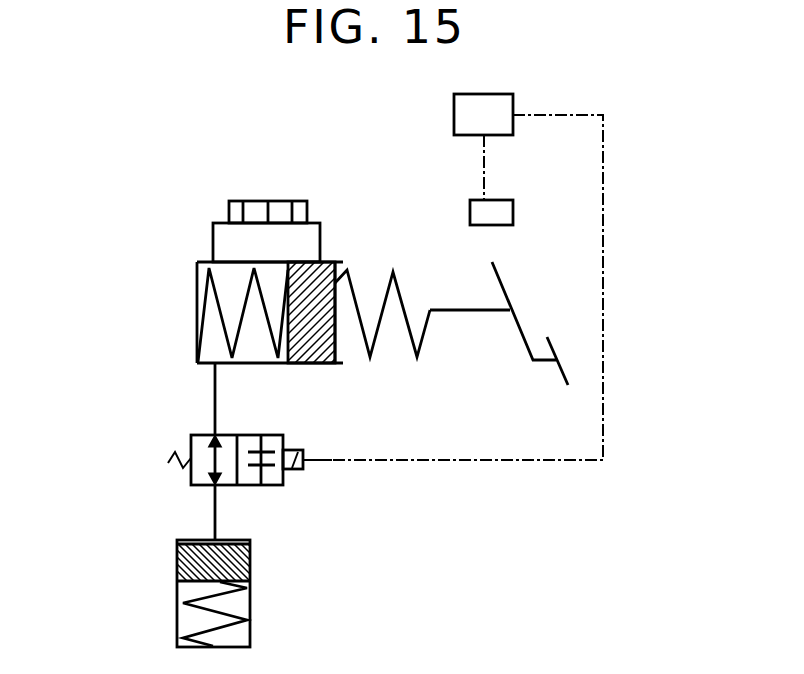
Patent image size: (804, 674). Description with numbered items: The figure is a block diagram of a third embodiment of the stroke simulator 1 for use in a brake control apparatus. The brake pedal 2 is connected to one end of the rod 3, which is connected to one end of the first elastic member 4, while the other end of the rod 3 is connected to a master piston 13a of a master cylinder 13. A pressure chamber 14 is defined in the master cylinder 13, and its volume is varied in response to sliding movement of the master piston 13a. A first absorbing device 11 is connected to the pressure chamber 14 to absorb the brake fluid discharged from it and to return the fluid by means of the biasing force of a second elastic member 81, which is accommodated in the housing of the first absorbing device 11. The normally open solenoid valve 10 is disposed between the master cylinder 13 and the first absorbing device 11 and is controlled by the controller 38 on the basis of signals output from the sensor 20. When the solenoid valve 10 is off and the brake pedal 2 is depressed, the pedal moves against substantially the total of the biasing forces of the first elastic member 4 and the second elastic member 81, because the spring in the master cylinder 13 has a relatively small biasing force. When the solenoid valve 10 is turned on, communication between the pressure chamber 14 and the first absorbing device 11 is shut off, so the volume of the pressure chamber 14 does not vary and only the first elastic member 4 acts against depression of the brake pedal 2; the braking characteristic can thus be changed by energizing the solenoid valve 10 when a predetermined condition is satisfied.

The stroke simulator 1 is at (110, 328).
The brake pedal 2 is at (550, 365).
The rod 3 is at (468, 312).
The first elastic member 4 is at (350, 282).
The solenoid valve 10 is at (230, 487).
The first absorbing device 11 is at (165, 568).
The master cylinder 13 is at (173, 265).
The master piston 13a is at (307, 356).
The pressure chamber 14 is at (197, 348).
The sensor 20 is at (513, 207).
The controller 38 is at (497, 97).
The second elastic member 81 is at (227, 627).